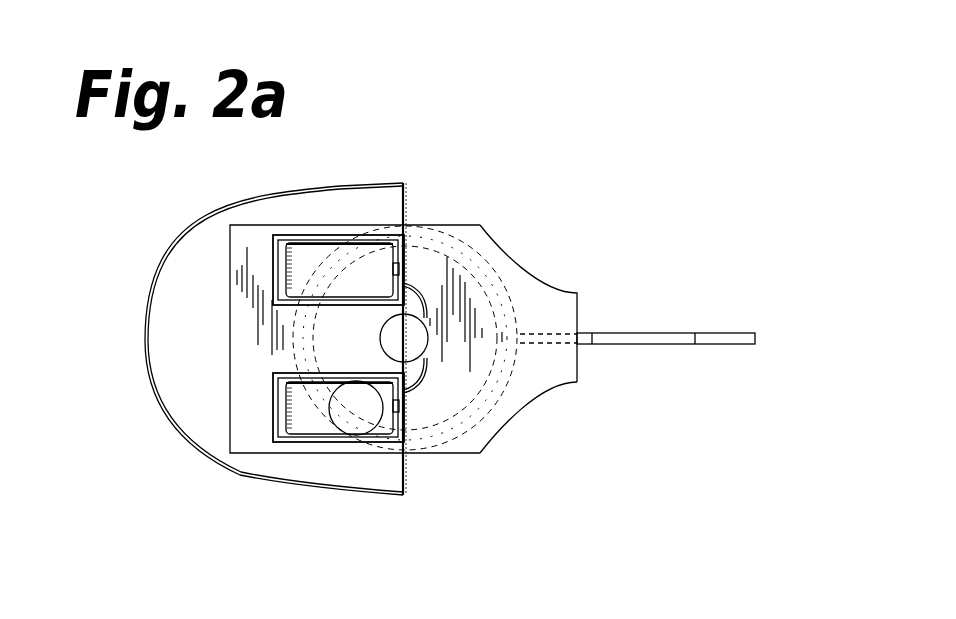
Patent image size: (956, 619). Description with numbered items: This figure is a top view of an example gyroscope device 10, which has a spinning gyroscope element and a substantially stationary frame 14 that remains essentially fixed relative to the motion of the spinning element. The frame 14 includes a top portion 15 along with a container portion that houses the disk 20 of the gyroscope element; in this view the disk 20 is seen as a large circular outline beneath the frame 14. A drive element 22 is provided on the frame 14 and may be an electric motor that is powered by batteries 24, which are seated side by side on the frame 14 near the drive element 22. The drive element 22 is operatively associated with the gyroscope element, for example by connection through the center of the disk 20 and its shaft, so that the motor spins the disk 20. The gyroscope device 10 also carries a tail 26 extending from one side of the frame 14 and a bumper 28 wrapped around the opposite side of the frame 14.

The gyroscope device 10 is at (624, 181).
The frame 14 is at (486, 203).
The top portion 15 is at (527, 405).
The disk 20 is at (450, 252).
The drive element 22 is at (380, 337).
The batteries 24 is at (375, 236).
The tail 26 is at (681, 332).
The bumper 28 is at (148, 361).